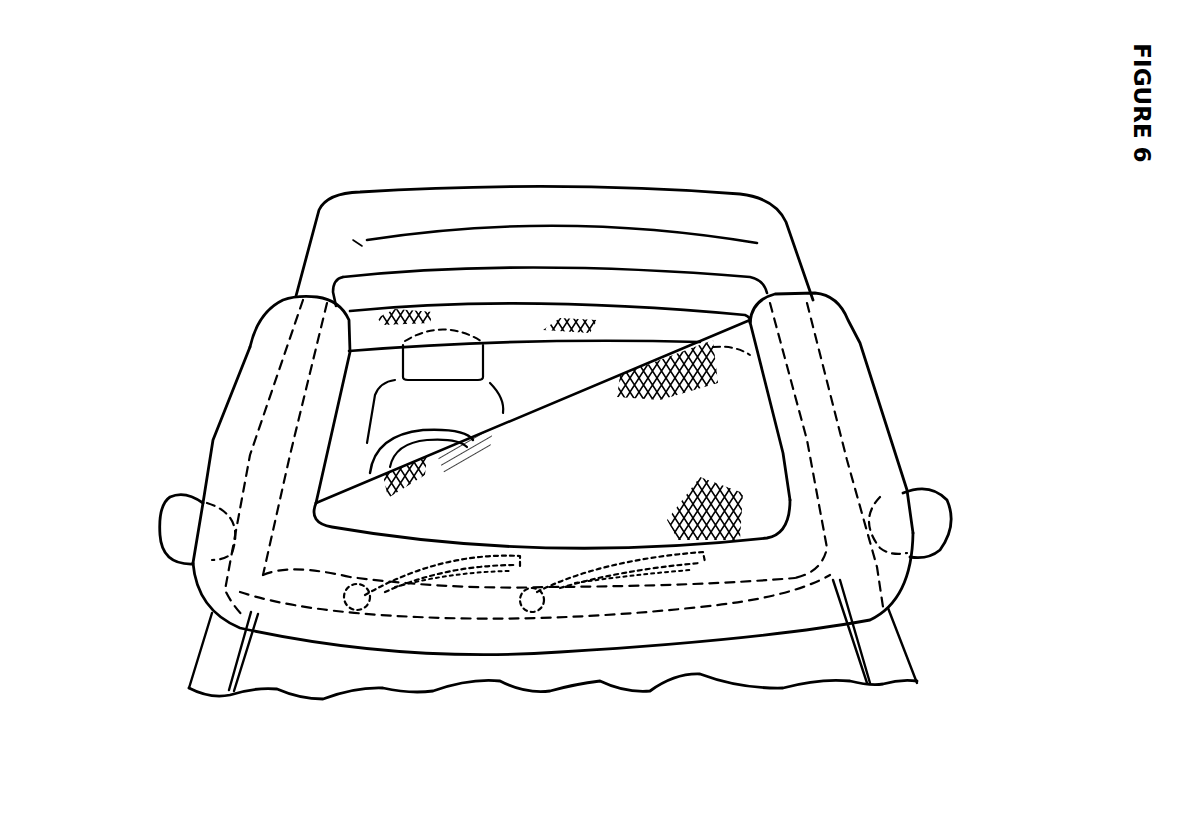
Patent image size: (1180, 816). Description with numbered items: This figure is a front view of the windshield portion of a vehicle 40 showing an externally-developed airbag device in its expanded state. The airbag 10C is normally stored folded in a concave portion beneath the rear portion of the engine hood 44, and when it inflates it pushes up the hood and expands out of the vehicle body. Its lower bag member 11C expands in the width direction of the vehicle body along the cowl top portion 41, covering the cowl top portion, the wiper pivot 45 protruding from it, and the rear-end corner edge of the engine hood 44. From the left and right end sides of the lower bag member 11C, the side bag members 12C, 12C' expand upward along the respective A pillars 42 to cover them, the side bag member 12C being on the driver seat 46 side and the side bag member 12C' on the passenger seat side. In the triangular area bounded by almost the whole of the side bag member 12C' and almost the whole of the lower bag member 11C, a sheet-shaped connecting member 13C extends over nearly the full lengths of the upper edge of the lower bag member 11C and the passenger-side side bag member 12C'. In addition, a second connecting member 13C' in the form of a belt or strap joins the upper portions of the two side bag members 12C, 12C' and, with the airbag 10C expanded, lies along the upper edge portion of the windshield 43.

The airbag 10C is at (180, 598).
The lower bag member 11C is at (593, 643).
The side bag member 12C is at (271, 394).
The side bag member 12C' is at (863, 413).
The connecting member 13C is at (595, 361).
The second connecting member 13C' is at (549, 225).
The vehicle 40 is at (699, 166).
The cowl top portion 41 is at (903, 620).
The A pillars 42 is at (812, 368).
The windshield 43 is at (370, 290).
The engine hood 44 is at (813, 663).
The wiper pivot 45 is at (340, 617).
The driver seat 46 is at (477, 400).